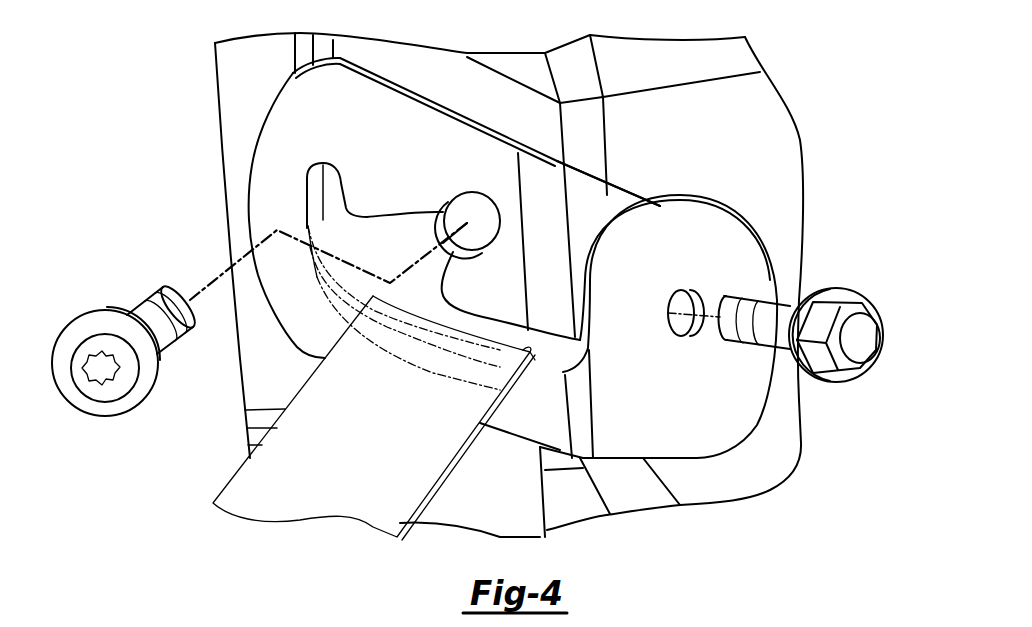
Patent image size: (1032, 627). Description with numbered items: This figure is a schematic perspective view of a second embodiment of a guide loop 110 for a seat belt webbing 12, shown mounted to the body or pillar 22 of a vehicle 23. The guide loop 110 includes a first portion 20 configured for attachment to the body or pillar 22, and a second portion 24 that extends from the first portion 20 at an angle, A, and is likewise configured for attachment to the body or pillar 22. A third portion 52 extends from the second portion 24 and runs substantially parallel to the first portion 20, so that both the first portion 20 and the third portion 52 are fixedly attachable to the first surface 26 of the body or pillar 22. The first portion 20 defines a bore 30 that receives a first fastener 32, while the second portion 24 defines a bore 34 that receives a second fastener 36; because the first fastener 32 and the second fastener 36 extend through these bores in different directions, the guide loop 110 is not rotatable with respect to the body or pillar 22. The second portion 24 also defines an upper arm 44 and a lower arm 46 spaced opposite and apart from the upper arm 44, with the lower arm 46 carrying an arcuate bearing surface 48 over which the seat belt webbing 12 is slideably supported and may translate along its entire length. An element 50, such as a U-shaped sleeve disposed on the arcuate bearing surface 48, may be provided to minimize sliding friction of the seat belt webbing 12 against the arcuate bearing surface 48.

The guide loop 110 is at (800, 67).
The body or pillar 22 is at (710, 123).
The first surface 26 is at (770, 193).
The second portion 24 is at (270, 210).
The upper arm 44 is at (305, 103).
The arcuate bearing surface 48 is at (310, 201).
The bore 34 is at (440, 211).
The third portion 52 is at (615, 200).
The first portion 20 is at (727, 410).
The lower arm 46 is at (508, 420).
The seat belt webbing 12 is at (376, 445).
The element 50 is at (327, 283).
The second fastener 36 is at (115, 407).
The bore 30 is at (705, 297).
The vehicle 23 is at (810, 323).
The first fastener 32 is at (858, 370).